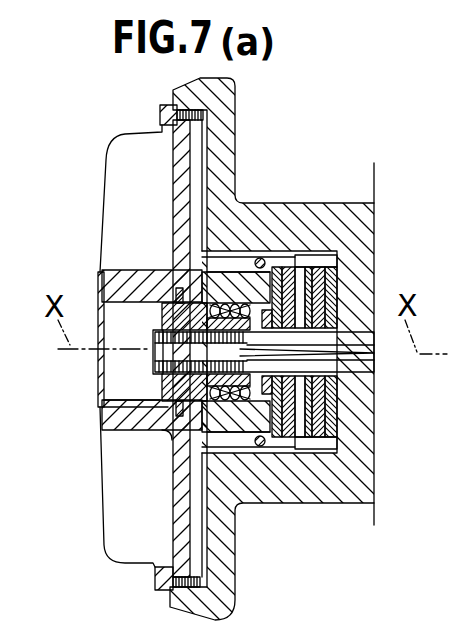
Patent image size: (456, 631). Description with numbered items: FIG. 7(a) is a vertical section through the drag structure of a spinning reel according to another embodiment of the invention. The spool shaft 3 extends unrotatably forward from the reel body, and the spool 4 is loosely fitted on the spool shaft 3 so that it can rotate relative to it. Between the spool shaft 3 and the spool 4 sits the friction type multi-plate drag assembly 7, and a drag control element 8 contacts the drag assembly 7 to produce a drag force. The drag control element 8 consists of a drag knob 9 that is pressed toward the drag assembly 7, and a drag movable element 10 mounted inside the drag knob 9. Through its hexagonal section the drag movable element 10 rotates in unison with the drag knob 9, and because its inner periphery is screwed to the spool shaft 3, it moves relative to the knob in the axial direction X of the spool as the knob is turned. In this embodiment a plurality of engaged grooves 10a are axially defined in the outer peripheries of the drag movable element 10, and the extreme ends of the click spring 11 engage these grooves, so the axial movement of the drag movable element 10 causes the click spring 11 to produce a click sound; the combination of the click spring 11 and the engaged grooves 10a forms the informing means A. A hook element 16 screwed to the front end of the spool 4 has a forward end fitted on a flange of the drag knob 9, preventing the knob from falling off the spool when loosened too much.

The spool shaft 3 is at (376, 390).
The spool 4 is at (312, 503).
The drag assembly 7 is at (321, 243).
The drag control element 8 is at (59, 180).
The drag knob 9 is at (103, 198).
The drag movable element 10 is at (160, 313).
The engaged grooves 10a is at (172, 433).
The click spring 11 is at (172, 420).
The hook element 16 is at (158, 115).
The informing means A is at (45, 438).